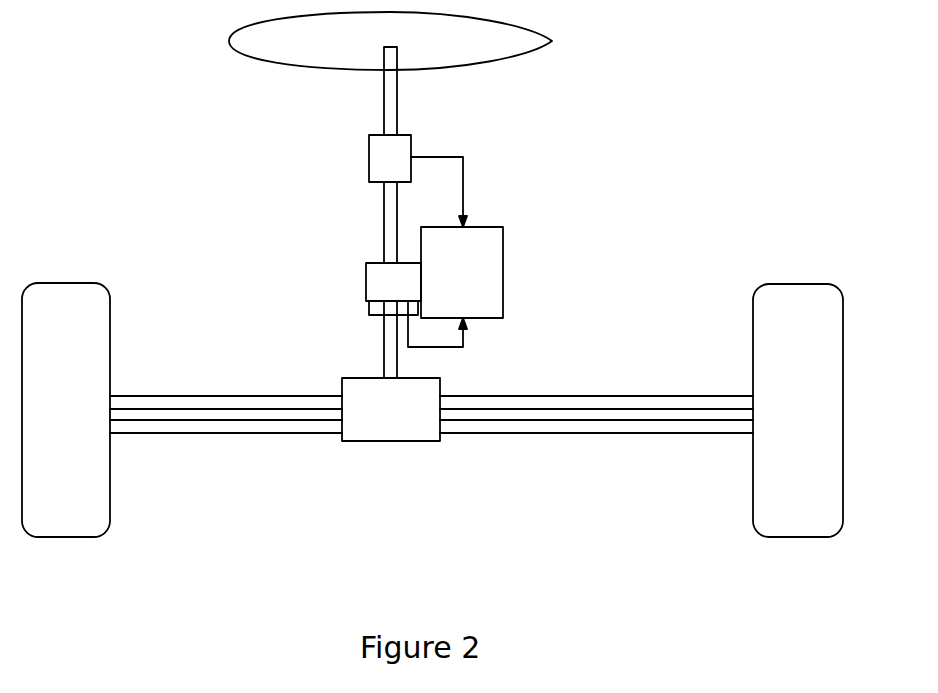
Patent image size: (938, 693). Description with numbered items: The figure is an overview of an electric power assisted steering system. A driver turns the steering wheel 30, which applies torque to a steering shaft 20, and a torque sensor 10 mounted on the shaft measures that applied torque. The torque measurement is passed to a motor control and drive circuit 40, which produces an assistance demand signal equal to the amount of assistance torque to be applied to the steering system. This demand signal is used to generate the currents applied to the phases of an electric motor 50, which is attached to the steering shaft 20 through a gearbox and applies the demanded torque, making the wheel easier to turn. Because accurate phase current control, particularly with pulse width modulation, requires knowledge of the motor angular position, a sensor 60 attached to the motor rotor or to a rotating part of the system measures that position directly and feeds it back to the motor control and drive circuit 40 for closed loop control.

The torque sensor 10 is at (369, 147).
The steering shaft 20 is at (397, 103).
The steering wheel 30 is at (552, 41).
The motor control and drive circuit 40 is at (481, 284).
The electric motor 50 is at (366, 283).
The sensor 60 is at (377, 316).